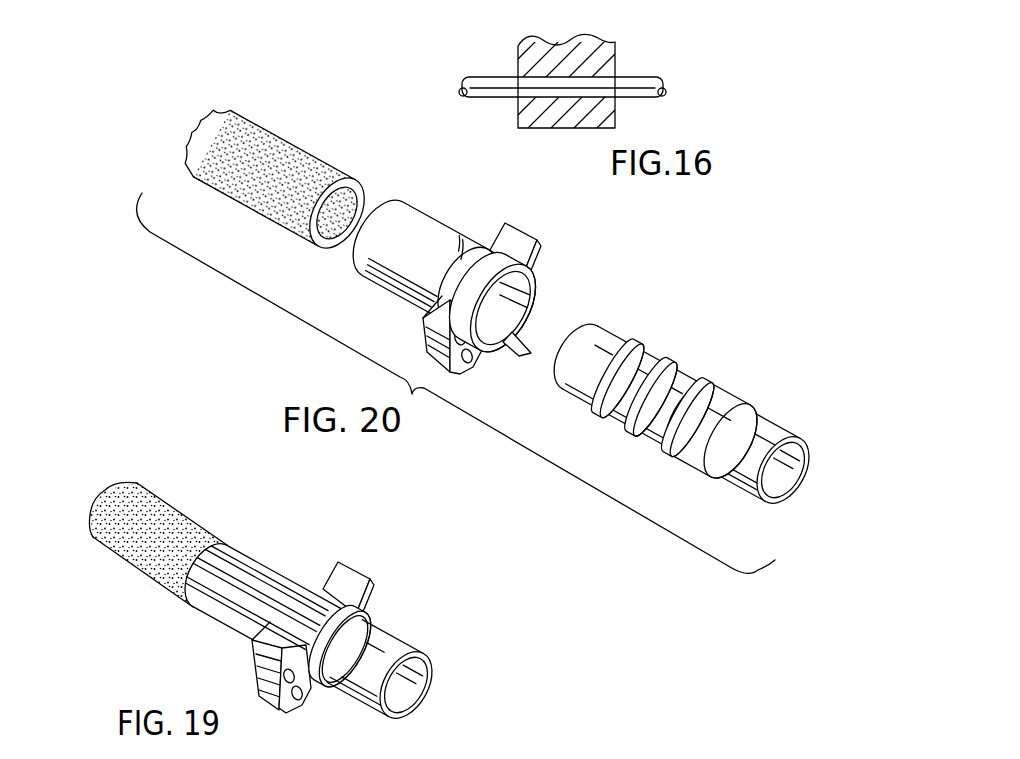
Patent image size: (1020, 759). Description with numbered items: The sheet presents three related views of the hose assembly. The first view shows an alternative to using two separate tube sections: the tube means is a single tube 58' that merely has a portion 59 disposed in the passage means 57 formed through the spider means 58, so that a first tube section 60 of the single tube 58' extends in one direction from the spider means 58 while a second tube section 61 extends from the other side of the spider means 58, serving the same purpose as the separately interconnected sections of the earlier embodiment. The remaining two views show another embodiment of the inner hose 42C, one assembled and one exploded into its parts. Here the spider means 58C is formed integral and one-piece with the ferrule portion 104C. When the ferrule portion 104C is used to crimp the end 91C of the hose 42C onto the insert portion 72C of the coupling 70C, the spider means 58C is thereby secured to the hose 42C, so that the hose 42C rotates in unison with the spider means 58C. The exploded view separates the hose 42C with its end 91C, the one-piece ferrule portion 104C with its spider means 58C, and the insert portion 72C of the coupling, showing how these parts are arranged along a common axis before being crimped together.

In FIG. 16, the passage means 57 is at (571, 100).
In FIG. 16, the spider means 58 is at (562, 73).
In FIG. 16, the single tube 58' is at (438, 68).
In FIG. 16, the portion 59 is at (566, 85).
In FIG. 16, the first tube section 60 is at (645, 73).
In FIG. 16, the second tube section 61 is at (480, 100).
In FIG. 19, the inner hose 42C is at (122, 565).
In FIG. 20, the inner hose 42C is at (237, 194).
In FIG. 19, the end 91C is at (177, 582).
In FIG. 20, the end 91C is at (293, 216).
In FIG. 19, the ferrule portion 104C is at (262, 548).
In FIG. 20, the ferrule portion 104C is at (437, 223).
In FIG. 19, the spider means 58C is at (312, 602).
In FIG. 20, the spider means 58C is at (540, 282).
In FIG. 19, the insert portion 72C is at (400, 640).
In FIG. 20, the insert portion 72C is at (763, 418).
In FIG. 19, the coupling 70C is at (240, 612).